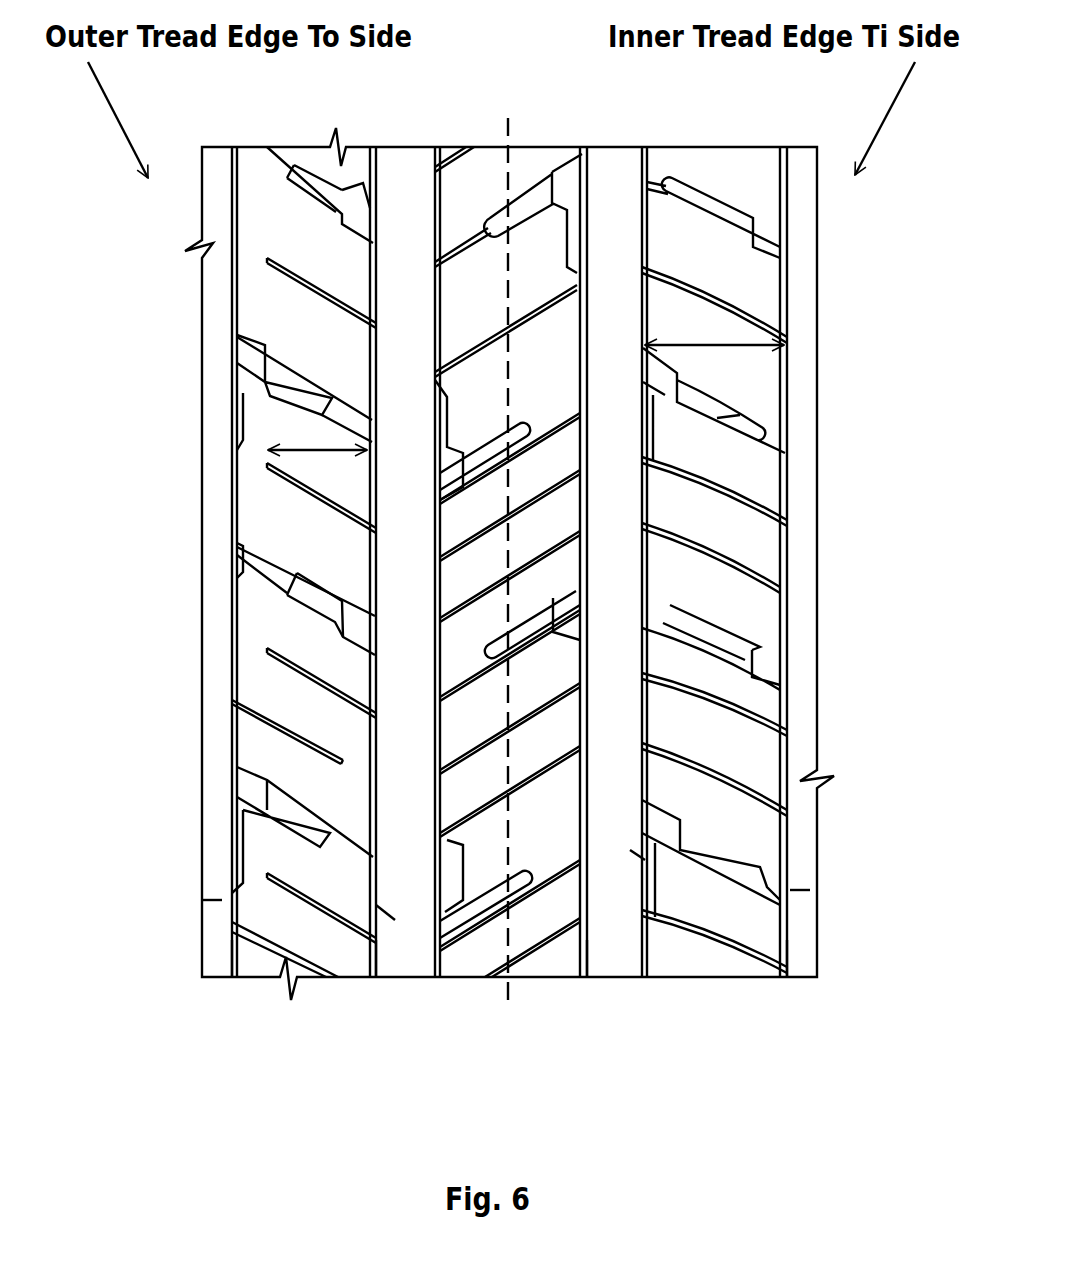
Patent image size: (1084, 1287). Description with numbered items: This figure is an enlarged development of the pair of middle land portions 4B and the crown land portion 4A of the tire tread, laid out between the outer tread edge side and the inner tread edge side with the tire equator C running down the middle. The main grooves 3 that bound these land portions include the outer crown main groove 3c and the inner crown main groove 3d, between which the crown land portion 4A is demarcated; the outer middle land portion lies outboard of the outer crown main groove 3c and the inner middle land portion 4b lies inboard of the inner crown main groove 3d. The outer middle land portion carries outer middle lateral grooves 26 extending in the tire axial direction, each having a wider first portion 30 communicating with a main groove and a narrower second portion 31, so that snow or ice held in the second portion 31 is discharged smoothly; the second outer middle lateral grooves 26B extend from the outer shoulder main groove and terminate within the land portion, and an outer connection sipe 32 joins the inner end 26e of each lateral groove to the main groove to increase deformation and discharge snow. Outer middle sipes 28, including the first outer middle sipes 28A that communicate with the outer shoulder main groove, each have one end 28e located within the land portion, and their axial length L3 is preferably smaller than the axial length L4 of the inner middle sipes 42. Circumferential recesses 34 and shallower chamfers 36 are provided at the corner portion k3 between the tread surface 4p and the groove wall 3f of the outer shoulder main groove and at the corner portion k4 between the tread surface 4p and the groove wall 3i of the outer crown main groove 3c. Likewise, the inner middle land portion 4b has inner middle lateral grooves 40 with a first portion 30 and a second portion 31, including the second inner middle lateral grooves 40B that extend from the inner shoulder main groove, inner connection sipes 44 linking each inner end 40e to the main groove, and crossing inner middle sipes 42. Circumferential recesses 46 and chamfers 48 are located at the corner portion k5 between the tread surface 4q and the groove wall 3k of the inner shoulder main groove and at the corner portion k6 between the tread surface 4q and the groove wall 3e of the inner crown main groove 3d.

The main grooves 3 is at (217, 185).
The outer crown main groove 3c is at (400, 200).
The inner crown main groove 3d is at (610, 185).
The groove wall of the inner crown main groove 3e is at (627, 960).
The groove wall of the outer shoulder main groove 3f is at (218, 963).
The groove wall of the outer crown main groove 3i is at (380, 960).
The groove wall of the inner shoulder main groove 3k is at (802, 960).
The tread surface of the outer middle land portion 4p is at (275, 225).
The tread surface of the inner middle land portion 4q is at (682, 227).
The crown land portion 4A is at (531, 173).
The middle land portions 4B is at (270, 195).
The inner middle land portion 4b is at (742, 180).
The tire equator C is at (507, 549).
The outer middle lateral grooves 26 is at (308, 600).
The second outer middle lateral grooves 26B is at (248, 388).
The inner end of the outer middle lateral groove 26e is at (300, 585).
The outer middle sipes 28 is at (300, 740).
The first outer middle sipes 28A is at (260, 800).
The one end of the outer middle sipe 28e is at (300, 680).
The first portion 30 is at (245, 357).
The second portion 31 is at (285, 380).
The outer connection sipes 32 is at (245, 540).
The circumferential recesses 34 is at (240, 482).
The chamfers 36 is at (237, 960).
The inner middle lateral grooves 40 is at (717, 417).
The second inner middle lateral grooves 40B is at (717, 213).
The inner end of the inner middle lateral groove 40e is at (668, 607).
The inner middle sipes 42 is at (743, 500).
The inner connection sipes 44 is at (740, 700).
The circumferential recesses 46 is at (780, 205).
The chamfers 48 is at (650, 960).
The length in the tire axial direction of each outer middle sipe L3 is at (315, 450).
The length in the tire axial direction of each inner middle sipe L4 is at (713, 347).
The corner portion k3 is at (225, 901).
The corner portion k4 is at (382, 914).
The corner portion k5 is at (794, 891).
The corner portion k6 is at (636, 848).